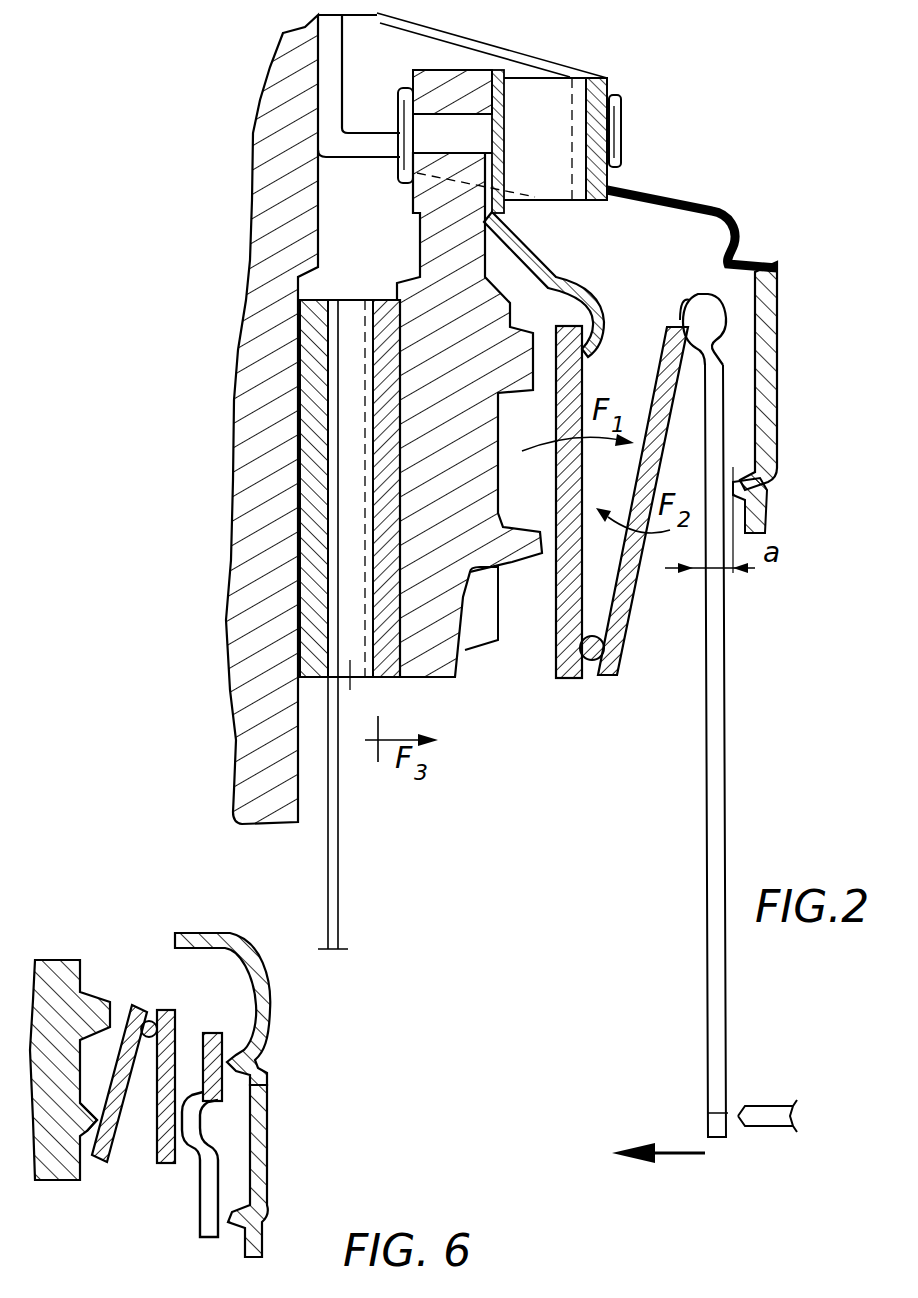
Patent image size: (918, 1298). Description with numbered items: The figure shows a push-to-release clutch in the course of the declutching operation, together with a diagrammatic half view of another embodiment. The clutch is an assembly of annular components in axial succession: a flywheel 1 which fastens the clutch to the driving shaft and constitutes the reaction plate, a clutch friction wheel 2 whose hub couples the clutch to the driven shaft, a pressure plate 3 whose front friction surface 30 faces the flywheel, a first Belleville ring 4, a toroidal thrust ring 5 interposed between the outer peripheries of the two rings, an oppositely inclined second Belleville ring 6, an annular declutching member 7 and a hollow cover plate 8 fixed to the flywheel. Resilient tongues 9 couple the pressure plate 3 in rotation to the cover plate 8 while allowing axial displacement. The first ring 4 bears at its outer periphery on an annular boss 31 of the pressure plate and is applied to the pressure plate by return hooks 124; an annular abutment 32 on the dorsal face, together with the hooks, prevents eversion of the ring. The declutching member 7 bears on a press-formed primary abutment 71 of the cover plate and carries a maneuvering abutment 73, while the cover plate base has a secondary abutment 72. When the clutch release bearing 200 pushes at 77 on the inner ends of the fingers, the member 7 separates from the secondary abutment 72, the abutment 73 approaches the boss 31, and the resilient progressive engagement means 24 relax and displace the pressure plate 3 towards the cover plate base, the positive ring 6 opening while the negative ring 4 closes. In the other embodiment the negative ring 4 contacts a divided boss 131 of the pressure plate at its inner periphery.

In FIG. 2, the flywheel 1 is at (240, 255).
In FIG. 2, the clutch friction wheel 2 is at (355, 908).
In FIG. 2, the pressure plate 3 is at (440, 322).
In FIG. 6, the pressure plate 3 is at (55, 970).
In FIG. 2, the first Belleville ring 4 is at (548, 588).
In FIG. 6, the first Belleville ring 4 is at (118, 1152).
In FIG. 2, the toroidal thrust ring 5 is at (612, 652).
In FIG. 6, the toroidal thrust ring 5 is at (128, 1015).
In FIG. 2, the second Belleville ring 6 is at (690, 437).
In FIG. 6, the second Belleville ring 6 is at (162, 1175).
In FIG. 2, the annular declutching member 7 is at (742, 826).
In FIG. 6, the annular declutching member 7 is at (190, 1192).
In FIG. 2, the hollow cover plate 8 is at (792, 352).
In FIG. 2, the resilient tongues 9 is at (552, 105).
In FIG. 2, the resilient progressive engagement means 24 is at (350, 690).
In FIG. 2, the front friction surface 30 is at (390, 548).
In FIG. 2, the annular boss 31 is at (535, 358).
In FIG. 2, the annular abutment 32 is at (515, 632).
In FIG. 2, the annular primary abutment 71 is at (724, 238).
In FIG. 6, the annular primary abutment 71 is at (245, 1062).
In FIG. 2, the annular secondary abutment 72 is at (758, 486).
In FIG. 6, the annular secondary abutment 72 is at (258, 1228).
In FIG. 2, the annular abutment 73 is at (680, 356).
In FIG. 6, the annular abutment 73 is at (188, 1132).
In FIG. 2, the line of contact with the clutch release bearing 77 is at (708, 1116).
In FIG. 2, the return hook 124 is at (575, 283).
In FIG. 6, the divided boss 131 is at (75, 1126).
In FIG. 2, the clutch release bearing 200 is at (758, 1118).